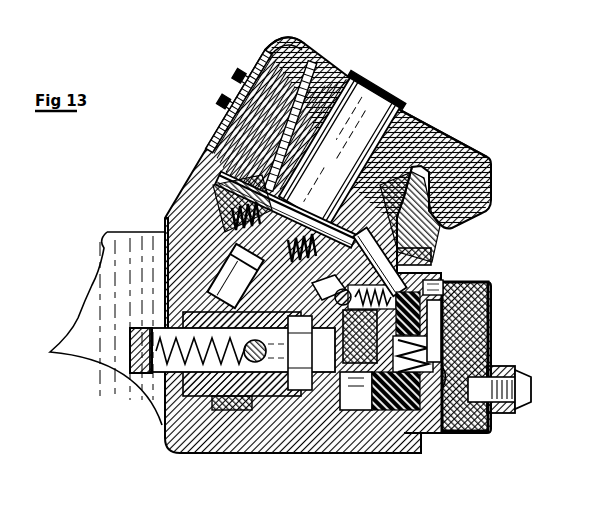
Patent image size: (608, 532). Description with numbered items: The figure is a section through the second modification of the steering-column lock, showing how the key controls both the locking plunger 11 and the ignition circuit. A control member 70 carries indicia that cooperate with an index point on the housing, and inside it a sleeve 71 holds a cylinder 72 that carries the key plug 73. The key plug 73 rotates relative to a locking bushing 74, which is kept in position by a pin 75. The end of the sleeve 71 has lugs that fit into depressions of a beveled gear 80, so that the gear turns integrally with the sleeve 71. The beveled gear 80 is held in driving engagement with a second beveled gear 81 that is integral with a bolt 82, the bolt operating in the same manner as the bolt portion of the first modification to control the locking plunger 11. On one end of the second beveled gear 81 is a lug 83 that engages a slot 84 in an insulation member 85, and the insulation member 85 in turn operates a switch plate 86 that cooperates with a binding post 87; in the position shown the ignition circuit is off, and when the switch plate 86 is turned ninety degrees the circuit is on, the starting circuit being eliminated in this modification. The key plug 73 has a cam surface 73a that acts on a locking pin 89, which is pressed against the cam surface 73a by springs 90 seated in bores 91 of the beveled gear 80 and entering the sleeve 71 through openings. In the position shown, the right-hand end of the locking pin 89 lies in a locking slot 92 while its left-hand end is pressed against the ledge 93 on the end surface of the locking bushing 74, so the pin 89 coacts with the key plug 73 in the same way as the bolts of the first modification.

The locking plunger 11 is at (128, 363).
The control member 70 is at (440, 152).
The sleeve 71 is at (267, 143).
The cylinder 72 is at (324, 92).
The key plug 73 is at (366, 108).
The cam surface 73a is at (386, 126).
The locking bushing 74 is at (400, 188).
The pin 75 is at (436, 258).
The beveled gear 80 is at (213, 210).
The second beveled gear 81 is at (320, 415).
The bolt 82 is at (235, 383).
The lug 83 is at (360, 440).
The slot 84 is at (390, 430).
The insulation member 85 is at (419, 442).
The switch plate 86 is at (491, 300).
The binding post 87 is at (495, 372).
The locking pin 89 is at (200, 168).
The springs 90 is at (170, 223).
The bores 91 is at (233, 243).
The locking slot 92 is at (447, 242).
The ledge 93 is at (268, 172).